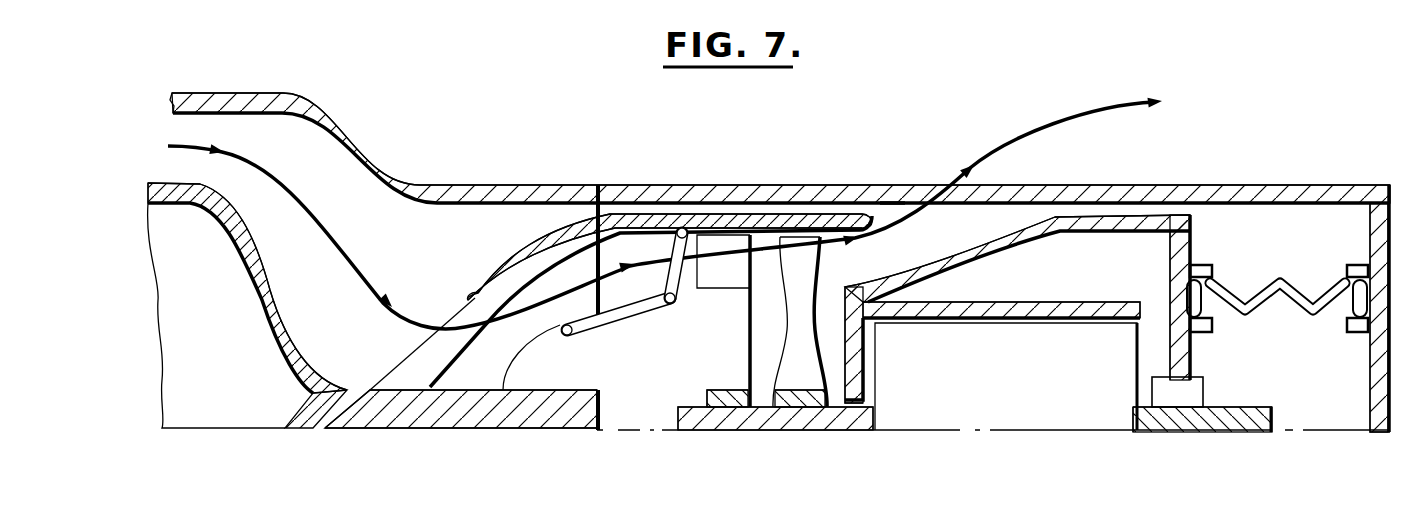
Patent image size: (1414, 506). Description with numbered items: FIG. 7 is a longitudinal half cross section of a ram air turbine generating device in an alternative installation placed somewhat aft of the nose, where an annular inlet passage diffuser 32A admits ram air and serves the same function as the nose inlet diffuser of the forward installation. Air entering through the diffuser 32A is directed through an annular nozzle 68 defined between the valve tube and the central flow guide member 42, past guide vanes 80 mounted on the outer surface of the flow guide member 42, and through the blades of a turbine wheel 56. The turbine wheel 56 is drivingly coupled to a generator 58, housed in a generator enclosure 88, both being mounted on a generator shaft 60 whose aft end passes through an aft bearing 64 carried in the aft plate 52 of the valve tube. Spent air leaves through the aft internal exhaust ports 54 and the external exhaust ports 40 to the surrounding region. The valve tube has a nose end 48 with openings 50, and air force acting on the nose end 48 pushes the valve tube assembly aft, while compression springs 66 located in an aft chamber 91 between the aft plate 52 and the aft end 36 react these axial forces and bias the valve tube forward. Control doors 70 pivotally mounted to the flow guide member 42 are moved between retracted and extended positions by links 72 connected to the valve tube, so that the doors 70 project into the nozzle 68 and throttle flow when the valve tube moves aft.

The annular inlet passage diffuser 32A is at (182, 126).
The aft end 36 is at (1400, 222).
The external exhaust ports 40 is at (894, 198).
The central flow guide member 42 is at (690, 345).
The nose end 48 is at (508, 418).
The openings 50 is at (463, 301).
The aft plate 52 is at (1195, 240).
The aft internal exhaust ports 54 is at (879, 204).
The turbine wheel 56 is at (810, 268).
The generator 58 is at (983, 383).
The generator shaft 60 is at (772, 420).
The aft bearing 64 is at (1190, 392).
The compression springs 66 is at (1286, 283).
The annular nozzle 68 is at (527, 290).
The control doors 70 is at (617, 318).
The links 72 is at (670, 248).
The guide vanes 80 is at (729, 246).
The generator enclosure 88 is at (1105, 300).
The aft chamber 91 is at (1333, 394).